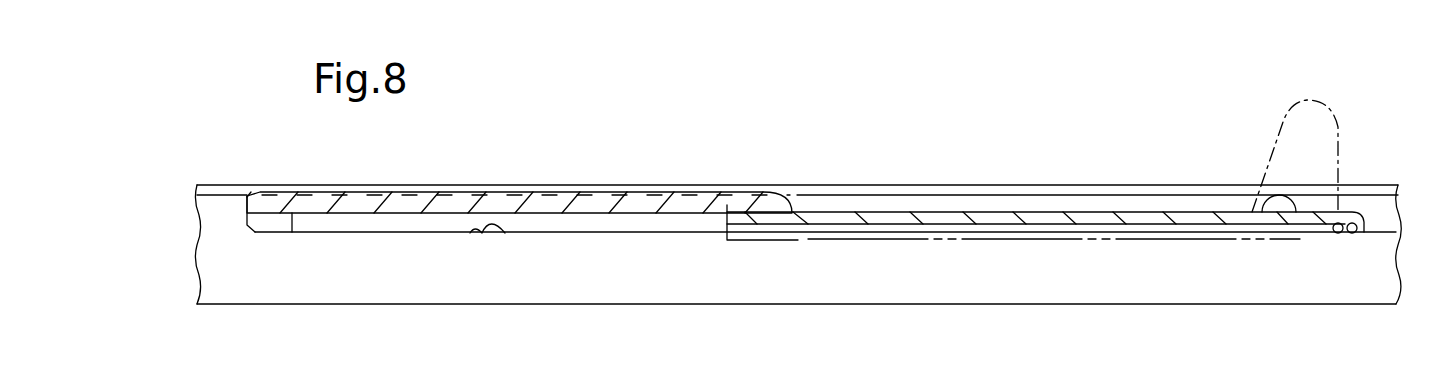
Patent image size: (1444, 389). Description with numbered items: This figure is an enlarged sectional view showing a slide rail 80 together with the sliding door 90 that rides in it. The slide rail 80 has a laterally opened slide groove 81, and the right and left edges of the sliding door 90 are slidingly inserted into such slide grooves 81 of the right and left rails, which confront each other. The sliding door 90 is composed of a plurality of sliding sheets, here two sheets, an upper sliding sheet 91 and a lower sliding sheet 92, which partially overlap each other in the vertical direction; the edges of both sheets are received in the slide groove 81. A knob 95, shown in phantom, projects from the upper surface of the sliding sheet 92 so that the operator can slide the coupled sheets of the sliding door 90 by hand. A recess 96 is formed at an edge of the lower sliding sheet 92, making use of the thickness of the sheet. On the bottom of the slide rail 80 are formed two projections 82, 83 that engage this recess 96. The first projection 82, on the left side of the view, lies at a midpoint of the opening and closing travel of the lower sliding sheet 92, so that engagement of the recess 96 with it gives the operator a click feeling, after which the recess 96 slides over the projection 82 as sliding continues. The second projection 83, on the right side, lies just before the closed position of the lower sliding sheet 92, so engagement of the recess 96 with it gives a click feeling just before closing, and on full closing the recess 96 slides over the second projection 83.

The slide rail 80 is at (230, 184).
The slide groove 81 is at (367, 222).
The first projection 82 is at (505, 233).
The second projection 83 is at (1338, 235).
The sliding door 90 is at (812, 108).
The upper sliding sheet 91 is at (592, 198).
The lower sliding sheet 92 is at (828, 212).
The knob 95 is at (1280, 122).
The recess 96 is at (1355, 235).